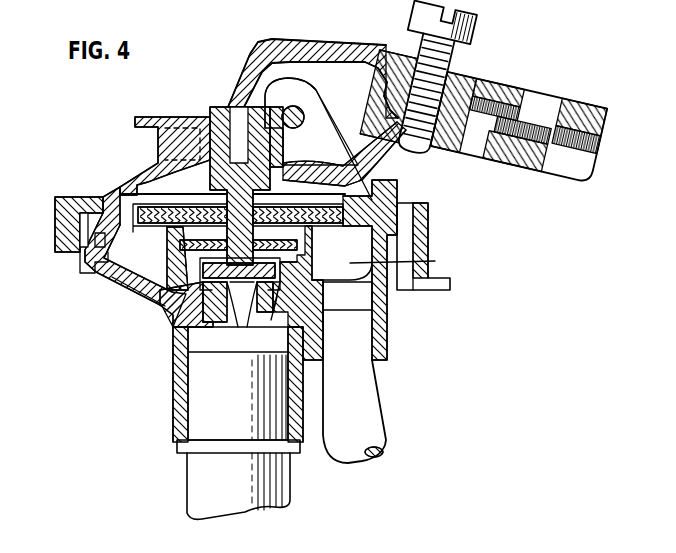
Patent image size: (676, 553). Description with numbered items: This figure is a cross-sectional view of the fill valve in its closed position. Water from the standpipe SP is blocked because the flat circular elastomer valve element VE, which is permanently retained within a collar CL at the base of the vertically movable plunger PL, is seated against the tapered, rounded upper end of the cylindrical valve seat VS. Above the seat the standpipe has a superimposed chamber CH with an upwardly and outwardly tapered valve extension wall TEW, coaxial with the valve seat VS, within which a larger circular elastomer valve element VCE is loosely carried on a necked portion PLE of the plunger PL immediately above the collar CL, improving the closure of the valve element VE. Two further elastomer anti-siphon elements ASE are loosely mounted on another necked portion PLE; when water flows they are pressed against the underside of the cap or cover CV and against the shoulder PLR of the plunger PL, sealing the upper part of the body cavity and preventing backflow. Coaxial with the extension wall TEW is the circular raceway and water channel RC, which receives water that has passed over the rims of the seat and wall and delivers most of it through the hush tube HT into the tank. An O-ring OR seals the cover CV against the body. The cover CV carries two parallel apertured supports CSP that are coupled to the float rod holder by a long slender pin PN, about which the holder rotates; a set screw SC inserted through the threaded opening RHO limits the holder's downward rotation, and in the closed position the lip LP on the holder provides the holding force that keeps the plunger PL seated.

The lip LP is at (230, 104).
The apertured supports on the cap CSP is at (343, 97).
The pin PN is at (300, 124).
The set screw SC is at (480, 25).
The threaded opening RHO is at (432, 68).
The plunger PL is at (262, 192).
The shoulder of plunger PLR is at (147, 178).
The cap or cover CV is at (128, 185).
The anti-siphon elements ASE is at (108, 193).
The raceway and water channel RC is at (50, 236).
The O-ring OR is at (88, 250).
The circular elastomer valve element VCE is at (185, 243).
The necked portion of plunger PLE is at (335, 270).
The collar CL is at (220, 268).
The valve seat VS is at (203, 296).
The tapered valve extension wall TEW is at (300, 288).
The elastomer valve element VE is at (216, 318).
The chamber CH is at (272, 325).
The hush tube HT is at (367, 383).
The standpipe SP is at (210, 411).